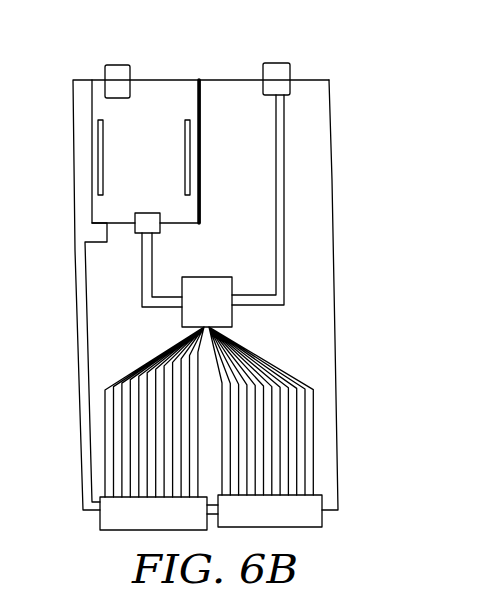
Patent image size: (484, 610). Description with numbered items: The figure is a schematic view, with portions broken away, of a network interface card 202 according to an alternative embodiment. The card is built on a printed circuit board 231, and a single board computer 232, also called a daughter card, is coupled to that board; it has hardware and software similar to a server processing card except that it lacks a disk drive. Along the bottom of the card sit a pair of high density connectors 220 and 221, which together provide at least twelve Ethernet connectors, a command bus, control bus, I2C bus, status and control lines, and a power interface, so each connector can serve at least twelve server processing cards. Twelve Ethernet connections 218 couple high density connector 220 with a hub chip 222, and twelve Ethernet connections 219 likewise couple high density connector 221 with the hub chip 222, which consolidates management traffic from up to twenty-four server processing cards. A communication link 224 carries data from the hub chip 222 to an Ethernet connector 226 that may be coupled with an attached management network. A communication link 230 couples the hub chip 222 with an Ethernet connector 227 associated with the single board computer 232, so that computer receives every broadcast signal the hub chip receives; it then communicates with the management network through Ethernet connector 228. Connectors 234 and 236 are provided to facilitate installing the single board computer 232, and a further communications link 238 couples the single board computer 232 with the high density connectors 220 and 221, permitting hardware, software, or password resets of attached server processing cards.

The network interface card 202 is at (350, 214).
The Ethernet connections 218 is at (218, 436).
The Ethernet connections 219 is at (208, 362).
The high density connector 220 is at (310, 520).
The high density connector 221 is at (110, 520).
The hub chip 222 is at (220, 277).
The communication link 224 is at (276, 140).
The Ethernet connector 226 is at (283, 63).
The Ethernet connector 227 is at (143, 213).
The Ethernet connector 228 is at (116, 63).
The communication link 230 is at (152, 260).
The printed circuit board 231 is at (333, 312).
The single board computer 232 is at (160, 92).
The connector 234 is at (98, 145).
The connector 236 is at (185, 148).
The communications link 238 is at (98, 243).